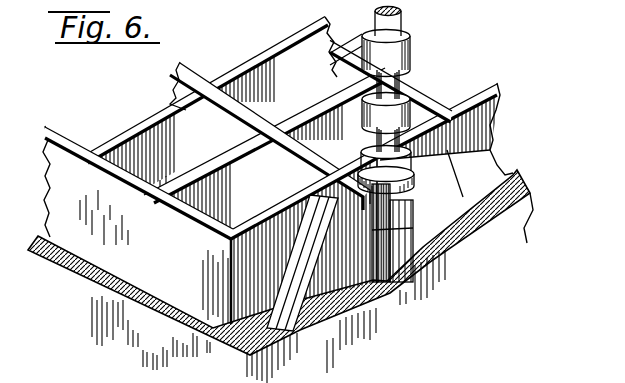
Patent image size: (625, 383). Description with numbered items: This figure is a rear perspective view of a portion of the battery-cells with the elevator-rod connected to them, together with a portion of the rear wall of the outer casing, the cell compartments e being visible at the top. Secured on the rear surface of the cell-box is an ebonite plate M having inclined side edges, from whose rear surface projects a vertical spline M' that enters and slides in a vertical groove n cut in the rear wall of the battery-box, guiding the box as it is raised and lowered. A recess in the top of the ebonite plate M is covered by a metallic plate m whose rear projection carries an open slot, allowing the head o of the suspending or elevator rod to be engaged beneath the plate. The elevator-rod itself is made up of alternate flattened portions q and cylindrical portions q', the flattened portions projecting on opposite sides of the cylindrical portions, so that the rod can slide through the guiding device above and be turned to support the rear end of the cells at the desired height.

The frame rails / lattice bars e is at (215, 170).
The flattened portions q is at (394, 78).
The cylindrical portions q' is at (408, 112).
The head of suspending or elevator rod o is at (402, 88).
The metallic plate m is at (480, 118).
The ebonite plate M is at (462, 170).
The vertical spline M' is at (407, 233).
The vertical groove n is at (375, 275).